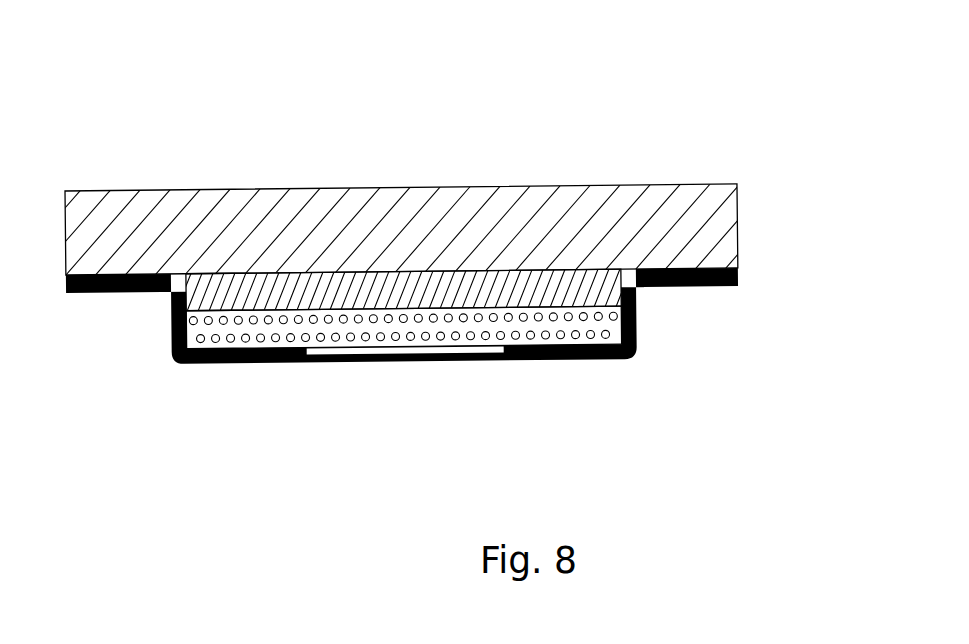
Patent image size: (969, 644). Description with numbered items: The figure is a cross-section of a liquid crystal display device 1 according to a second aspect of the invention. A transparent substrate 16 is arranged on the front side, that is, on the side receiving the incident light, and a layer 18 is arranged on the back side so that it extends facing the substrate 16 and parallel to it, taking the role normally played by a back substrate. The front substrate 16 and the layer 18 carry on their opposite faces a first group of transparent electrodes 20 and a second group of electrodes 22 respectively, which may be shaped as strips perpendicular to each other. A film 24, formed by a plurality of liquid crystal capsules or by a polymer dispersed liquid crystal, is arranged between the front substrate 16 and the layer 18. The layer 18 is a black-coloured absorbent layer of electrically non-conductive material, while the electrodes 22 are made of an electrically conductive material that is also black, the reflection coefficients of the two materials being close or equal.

The liquid crystal display device 1 is at (753, 146).
The transparent substrate 16 is at (713, 240).
The layer 18 is at (738, 281).
The first group of transparent electrodes 20 is at (405, 290).
The second group of electrodes 22 is at (487, 357).
The film 24 is at (340, 340).